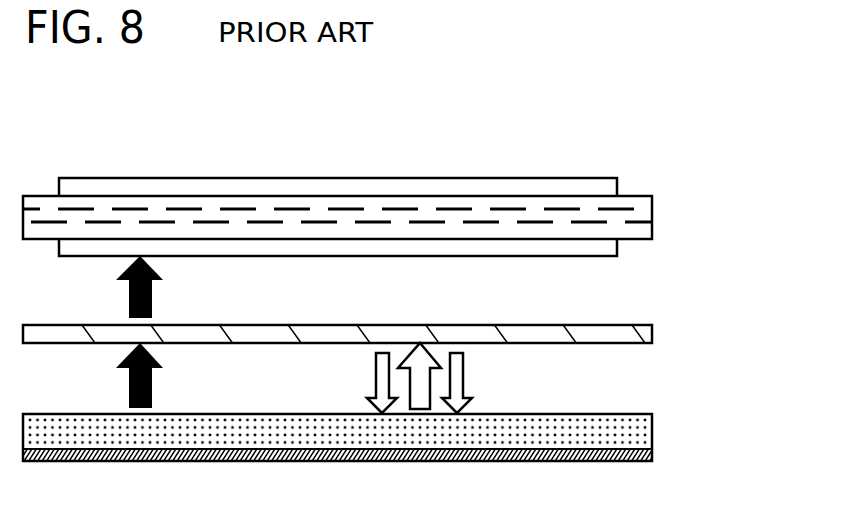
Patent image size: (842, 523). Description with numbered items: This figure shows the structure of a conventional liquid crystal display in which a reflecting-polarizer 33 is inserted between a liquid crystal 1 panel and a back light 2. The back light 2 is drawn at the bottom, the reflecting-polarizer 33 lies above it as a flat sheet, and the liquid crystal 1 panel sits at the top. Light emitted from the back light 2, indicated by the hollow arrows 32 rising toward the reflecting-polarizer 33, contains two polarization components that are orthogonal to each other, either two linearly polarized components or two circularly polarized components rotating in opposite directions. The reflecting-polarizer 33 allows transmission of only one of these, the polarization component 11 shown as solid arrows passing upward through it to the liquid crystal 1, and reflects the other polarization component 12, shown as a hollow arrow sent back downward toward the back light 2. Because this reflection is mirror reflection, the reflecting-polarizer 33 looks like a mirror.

The liquid crystal 1 is at (643, 214).
The reflective polarizing plate 33 is at (643, 334).
The back light 2 is at (643, 429).
The polarization component 11 is at (138, 408).
The polarization component 12 is at (421, 398).
The light emitted from backlight 32 is at (456, 383).